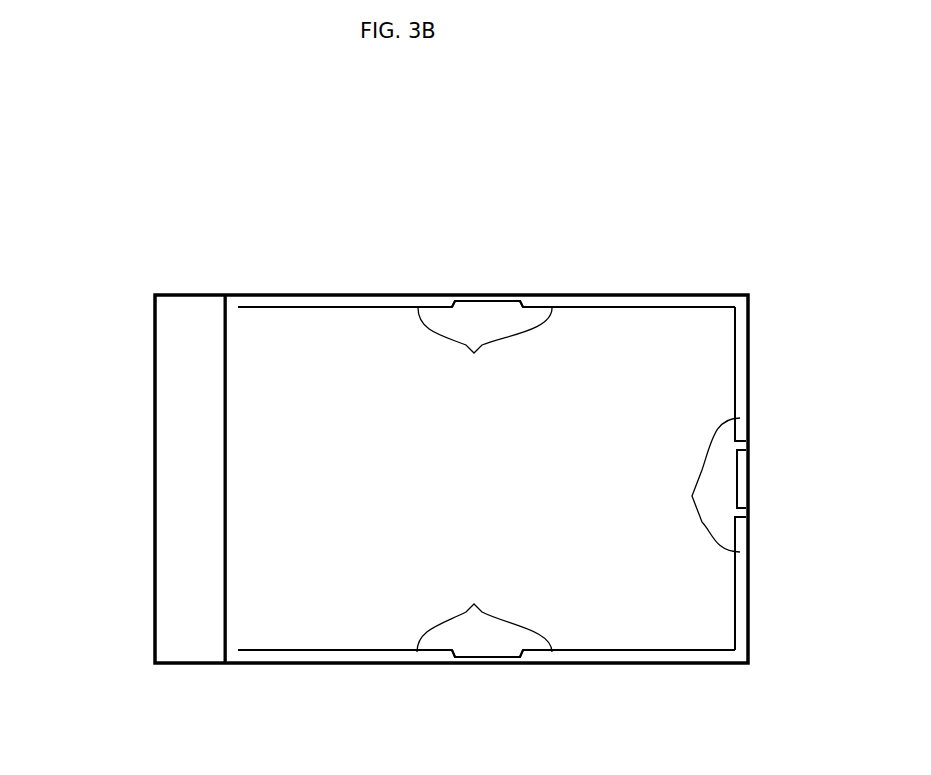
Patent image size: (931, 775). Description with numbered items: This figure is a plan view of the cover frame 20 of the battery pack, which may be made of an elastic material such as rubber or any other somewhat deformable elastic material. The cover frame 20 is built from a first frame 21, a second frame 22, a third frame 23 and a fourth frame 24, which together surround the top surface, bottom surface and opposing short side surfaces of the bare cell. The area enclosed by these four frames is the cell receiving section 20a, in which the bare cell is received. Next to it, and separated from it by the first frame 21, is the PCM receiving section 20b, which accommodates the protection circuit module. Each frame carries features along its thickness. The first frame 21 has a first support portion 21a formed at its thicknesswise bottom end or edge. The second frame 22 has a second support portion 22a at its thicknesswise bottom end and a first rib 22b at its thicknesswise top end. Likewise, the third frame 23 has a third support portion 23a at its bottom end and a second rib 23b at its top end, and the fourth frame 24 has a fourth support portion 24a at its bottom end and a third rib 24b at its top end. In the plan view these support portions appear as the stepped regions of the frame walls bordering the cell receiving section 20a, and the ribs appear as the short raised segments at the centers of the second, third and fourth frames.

The cover frame 20 is at (214, 233).
The cell receiving section 20a is at (350, 582).
The PCM receiving section 20b is at (178, 598).
The first frame 21 is at (224, 521).
The first support portion 21a is at (228, 458).
The second frame 22 is at (752, 371).
The second support portion 22a is at (690, 485).
The first rib 22b is at (743, 485).
The third frame 23 is at (598, 295).
The third support portion 23a is at (485, 349).
The second rib 23b is at (483, 301).
The fourth frame 24 is at (598, 665).
The fourth support portion 24a is at (484, 612).
The third rib 24b is at (483, 658).